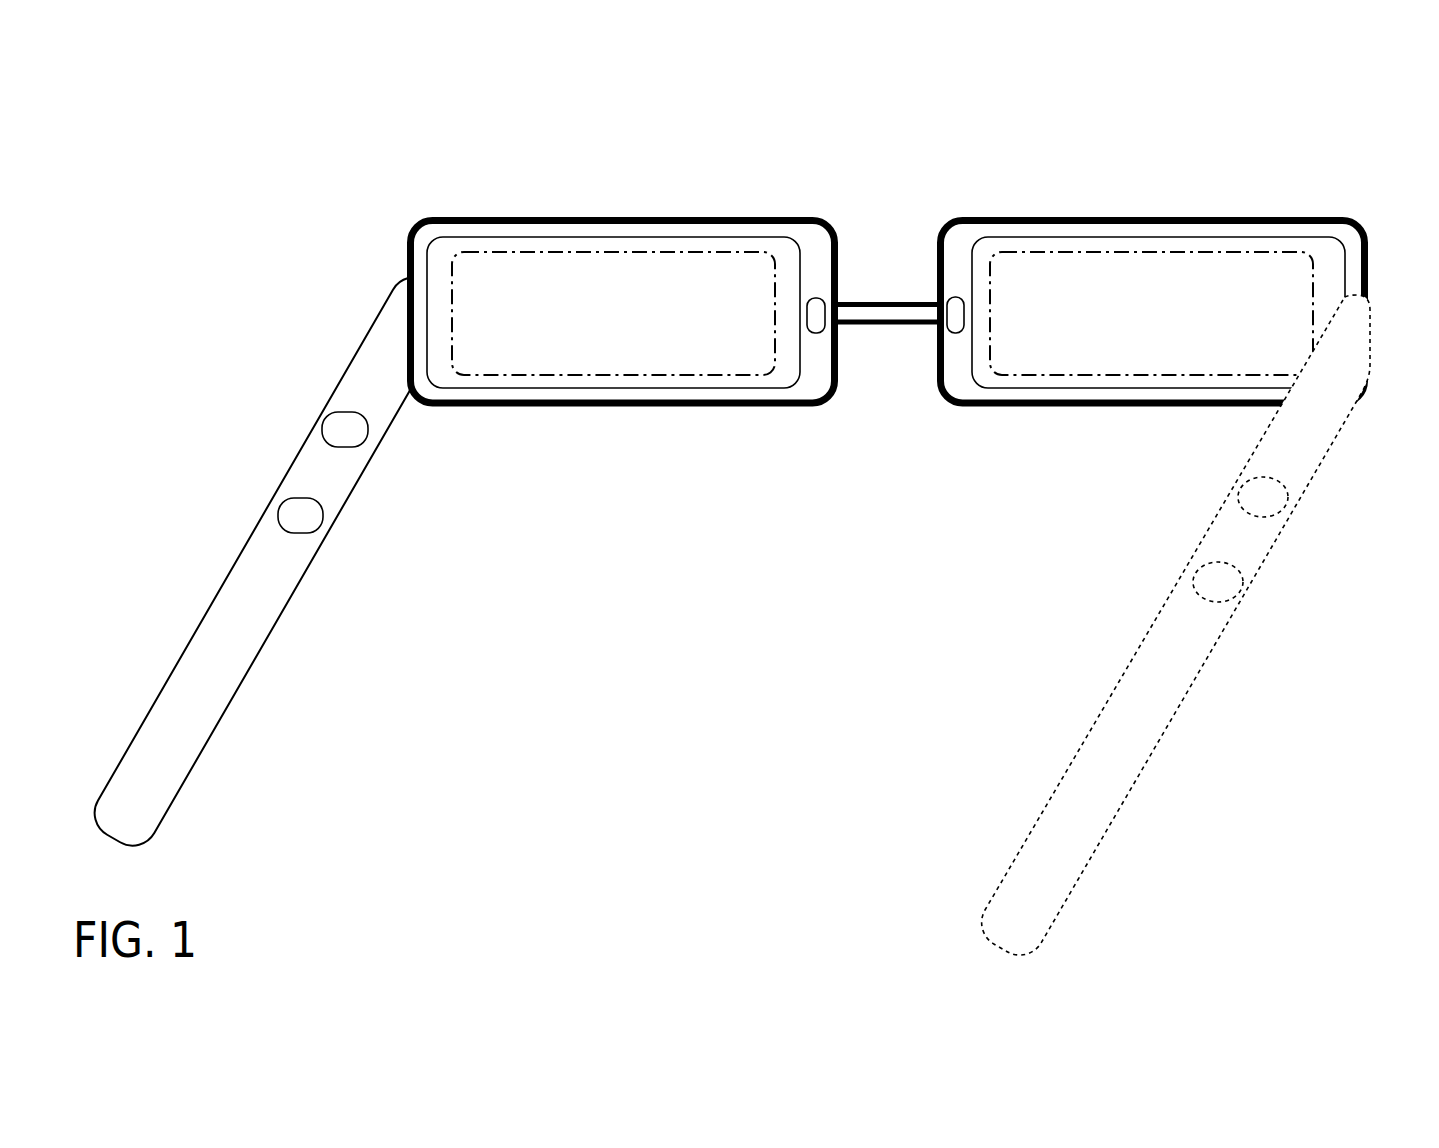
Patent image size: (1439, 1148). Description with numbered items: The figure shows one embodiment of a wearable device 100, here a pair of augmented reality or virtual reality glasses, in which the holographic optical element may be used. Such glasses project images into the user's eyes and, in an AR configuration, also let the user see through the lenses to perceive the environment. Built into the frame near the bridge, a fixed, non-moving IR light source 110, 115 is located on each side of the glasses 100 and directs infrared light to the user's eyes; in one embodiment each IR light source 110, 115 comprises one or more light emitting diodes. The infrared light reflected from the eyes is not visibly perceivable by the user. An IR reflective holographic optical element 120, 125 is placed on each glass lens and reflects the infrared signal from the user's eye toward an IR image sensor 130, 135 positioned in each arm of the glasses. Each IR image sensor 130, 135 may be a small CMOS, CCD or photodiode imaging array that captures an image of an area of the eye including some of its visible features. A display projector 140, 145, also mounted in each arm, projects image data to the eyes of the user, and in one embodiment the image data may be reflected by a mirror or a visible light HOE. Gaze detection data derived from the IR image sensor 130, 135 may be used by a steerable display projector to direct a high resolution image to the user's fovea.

The wearable device 100 is at (725, 538).
The IR light source 110 is at (813, 297).
The IR light source 115 is at (955, 295).
The IR reflective holographic optical element 120 is at (540, 260).
The IR reflective holographic optical element 125 is at (1197, 253).
The IR image sensor 130 is at (328, 410).
The IR image sensor 135 is at (1284, 510).
The display projector 140 is at (282, 501).
The display projector 145 is at (1239, 605).